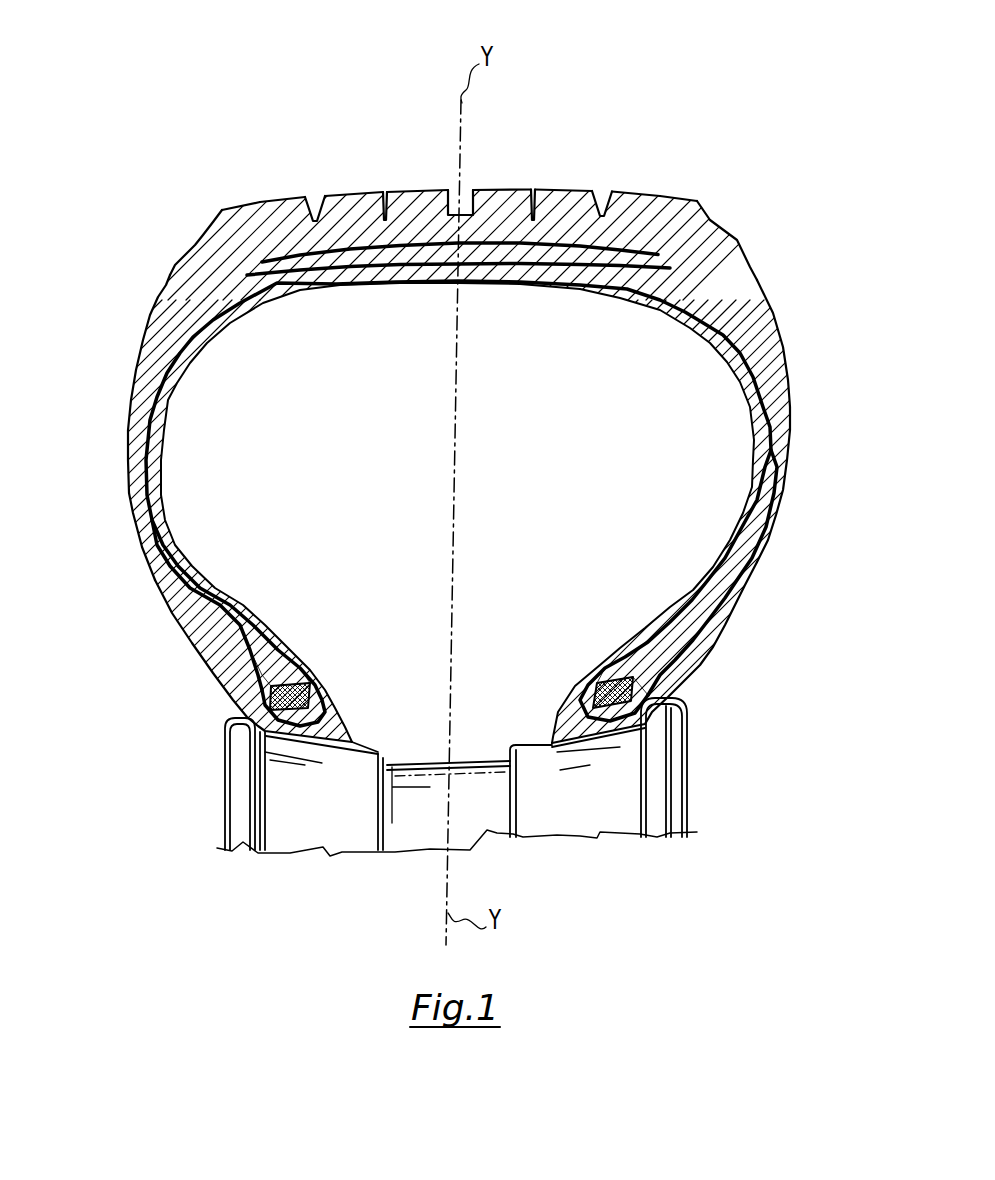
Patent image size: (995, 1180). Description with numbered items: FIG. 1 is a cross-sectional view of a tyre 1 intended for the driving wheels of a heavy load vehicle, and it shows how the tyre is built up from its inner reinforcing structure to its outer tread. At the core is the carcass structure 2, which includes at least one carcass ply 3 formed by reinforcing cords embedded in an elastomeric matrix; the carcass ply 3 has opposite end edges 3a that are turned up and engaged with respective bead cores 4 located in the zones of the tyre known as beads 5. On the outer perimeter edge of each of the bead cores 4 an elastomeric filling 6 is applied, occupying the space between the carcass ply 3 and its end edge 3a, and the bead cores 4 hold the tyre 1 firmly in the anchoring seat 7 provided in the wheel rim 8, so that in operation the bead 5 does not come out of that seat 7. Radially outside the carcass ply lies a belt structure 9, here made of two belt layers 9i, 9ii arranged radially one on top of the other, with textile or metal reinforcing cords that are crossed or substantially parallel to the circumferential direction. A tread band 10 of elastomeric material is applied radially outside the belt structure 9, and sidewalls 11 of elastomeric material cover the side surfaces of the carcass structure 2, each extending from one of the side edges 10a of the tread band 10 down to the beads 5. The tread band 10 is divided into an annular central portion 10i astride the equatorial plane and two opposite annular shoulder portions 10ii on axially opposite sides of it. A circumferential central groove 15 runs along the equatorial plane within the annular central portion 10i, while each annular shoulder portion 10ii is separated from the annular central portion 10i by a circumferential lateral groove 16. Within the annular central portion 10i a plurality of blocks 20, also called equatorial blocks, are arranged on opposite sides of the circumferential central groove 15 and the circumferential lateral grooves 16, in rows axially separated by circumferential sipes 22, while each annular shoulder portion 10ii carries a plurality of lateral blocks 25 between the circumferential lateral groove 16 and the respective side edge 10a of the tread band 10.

The tyre 1 is at (819, 155).
The carcass structure 2 is at (753, 337).
The carcass ply 3 is at (733, 313).
The end edges 3a is at (247, 673).
The bead cores 4 is at (262, 731).
The beads 5 is at (168, 645).
The elastomeric filling 6 is at (293, 645).
The anchoring seat 7 is at (369, 712).
The wheel rim 8 is at (613, 807).
The belt structure 9 is at (524, 159).
The belt layer 9i is at (672, 264).
The belt layer 9ii is at (692, 212).
The tread band 10 is at (479, 112).
The side edges 10a is at (192, 200).
The annular central portion 10i is at (458, 144).
The annular shoulder portions 10ii is at (479, 139).
The sidewalls 11 is at (110, 424).
The circumferential central groove 15 is at (468, 198).
The circumferential lateral groove 16 is at (315, 192).
The blocks 20 is at (350, 198).
The circumferential sipes 22 is at (385, 198).
The lateral blocks 25 is at (233, 206).